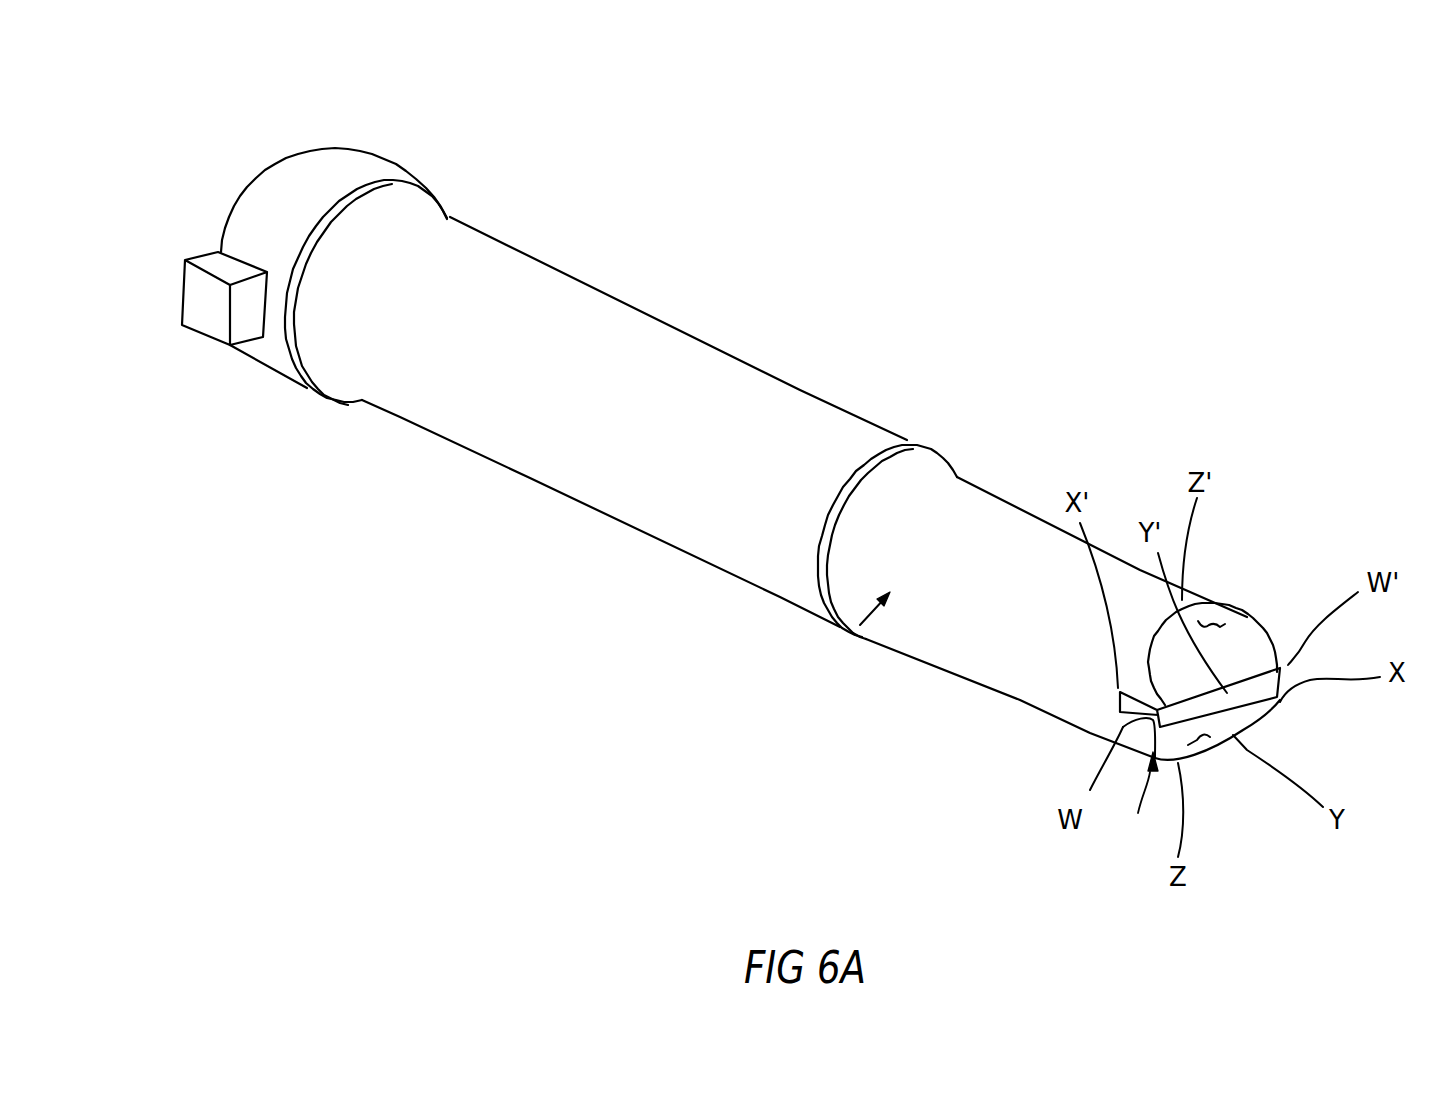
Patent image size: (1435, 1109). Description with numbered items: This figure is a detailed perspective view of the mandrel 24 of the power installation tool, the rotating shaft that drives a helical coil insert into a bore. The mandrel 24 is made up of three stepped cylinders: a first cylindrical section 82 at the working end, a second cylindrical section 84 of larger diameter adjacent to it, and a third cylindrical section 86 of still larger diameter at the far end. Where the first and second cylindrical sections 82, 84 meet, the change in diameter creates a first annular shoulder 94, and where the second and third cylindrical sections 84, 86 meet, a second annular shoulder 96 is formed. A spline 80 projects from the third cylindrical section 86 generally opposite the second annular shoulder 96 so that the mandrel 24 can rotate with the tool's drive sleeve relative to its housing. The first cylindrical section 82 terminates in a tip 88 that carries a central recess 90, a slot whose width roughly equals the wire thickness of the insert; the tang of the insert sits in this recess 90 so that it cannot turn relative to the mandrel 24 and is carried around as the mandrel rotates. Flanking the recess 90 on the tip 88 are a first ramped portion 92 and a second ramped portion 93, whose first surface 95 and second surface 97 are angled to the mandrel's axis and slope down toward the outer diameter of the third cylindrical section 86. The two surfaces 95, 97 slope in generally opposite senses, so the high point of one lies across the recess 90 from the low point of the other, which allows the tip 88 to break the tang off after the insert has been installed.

The mandrel 24 is at (847, 633).
The spline 80 is at (200, 308).
The first cylindrical section 82 is at (907, 617).
The second cylindrical section 84 is at (423, 395).
The third cylindrical section 86 is at (318, 160).
The tip 88 is at (1134, 800).
The central recess 90 is at (1280, 677).
The first ramped portion 92 is at (1243, 718).
The second ramped portion 93 is at (1243, 622).
The first annular shoulder 94 is at (905, 440).
The first surface 95 is at (1210, 747).
The second annular shoulder 96 is at (423, 193).
The second surface 97 is at (1210, 618).